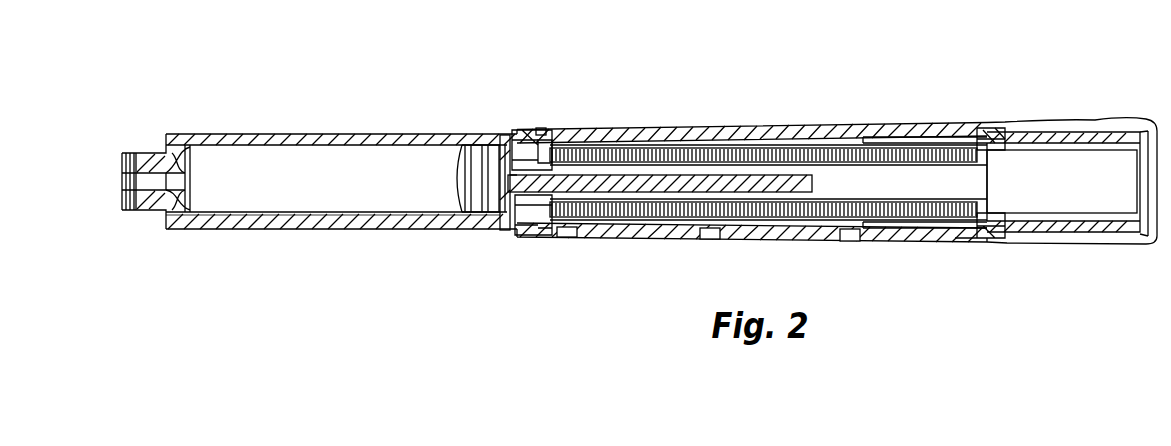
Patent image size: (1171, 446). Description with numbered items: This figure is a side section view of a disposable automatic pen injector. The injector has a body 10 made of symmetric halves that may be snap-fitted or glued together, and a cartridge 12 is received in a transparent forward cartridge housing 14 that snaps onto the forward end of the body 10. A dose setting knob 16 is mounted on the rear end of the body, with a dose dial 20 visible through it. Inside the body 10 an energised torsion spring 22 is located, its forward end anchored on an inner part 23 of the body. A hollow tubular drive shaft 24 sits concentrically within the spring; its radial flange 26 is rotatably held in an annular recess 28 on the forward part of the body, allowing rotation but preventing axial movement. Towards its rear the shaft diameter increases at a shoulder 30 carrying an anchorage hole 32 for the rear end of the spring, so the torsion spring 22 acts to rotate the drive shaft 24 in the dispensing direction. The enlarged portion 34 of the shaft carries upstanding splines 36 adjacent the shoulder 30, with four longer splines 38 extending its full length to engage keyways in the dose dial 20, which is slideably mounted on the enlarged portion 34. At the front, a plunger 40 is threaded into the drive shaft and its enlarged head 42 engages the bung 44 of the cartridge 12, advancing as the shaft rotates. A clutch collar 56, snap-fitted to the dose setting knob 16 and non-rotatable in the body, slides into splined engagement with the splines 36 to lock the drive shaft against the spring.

The body 10 is at (835, 126).
The cartridge 12 is at (338, 172).
The cartridge housing 14 is at (283, 222).
The dose setting knob 16 is at (1108, 121).
The dose dial 20 is at (1057, 125).
The torsion spring 22 is at (792, 140).
The inner part of the body 23 is at (560, 131).
The drive shaft 24 is at (720, 160).
The radial flange 26 is at (530, 130).
The annular recess 28 is at (541, 130).
The shoulder 30 is at (963, 240).
The anchorage hole 32 is at (983, 130).
The enlarged portion 34 is at (1086, 190).
The splines 36 is at (995, 130).
The long splines 38 is at (578, 225).
The plunger 40 is at (661, 180).
The enlarged head 42 is at (511, 218).
The bung 44 is at (466, 150).
The clutch collar 56 is at (916, 126).